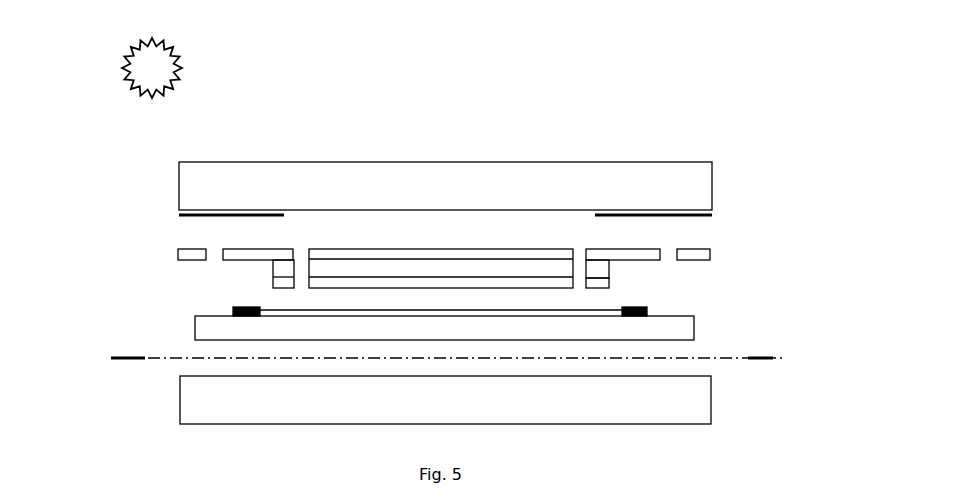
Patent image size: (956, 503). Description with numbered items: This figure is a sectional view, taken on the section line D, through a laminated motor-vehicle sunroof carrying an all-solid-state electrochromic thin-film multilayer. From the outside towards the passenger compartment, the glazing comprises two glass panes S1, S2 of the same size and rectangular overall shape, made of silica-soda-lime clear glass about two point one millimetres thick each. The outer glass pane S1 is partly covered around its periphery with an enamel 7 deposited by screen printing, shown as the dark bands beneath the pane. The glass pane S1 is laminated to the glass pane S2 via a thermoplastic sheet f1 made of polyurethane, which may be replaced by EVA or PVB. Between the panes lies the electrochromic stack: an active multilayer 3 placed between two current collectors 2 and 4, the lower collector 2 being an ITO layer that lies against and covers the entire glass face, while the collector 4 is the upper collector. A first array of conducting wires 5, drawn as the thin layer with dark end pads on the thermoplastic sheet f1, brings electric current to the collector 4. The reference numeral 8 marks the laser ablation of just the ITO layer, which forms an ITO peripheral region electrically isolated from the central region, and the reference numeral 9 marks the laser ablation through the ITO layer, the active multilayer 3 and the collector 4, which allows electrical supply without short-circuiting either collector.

The glass pane S1 is at (156, 183).
The glass pane S2 is at (611, 427).
The enamel 7 is at (185, 218).
The laser ablation of the ITO layer 8 is at (667, 247).
The laser ablation of the ITO layer, active multilayer and collector 9 is at (575, 247).
The current collector 2 is at (713, 250).
The active multilayer 3 is at (611, 269).
The current collector 4 is at (611, 281).
The first array of conducting wires 5 is at (226, 312).
The thermoplastic sheet f1 is at (697, 326).
The section line D is at (133, 361).